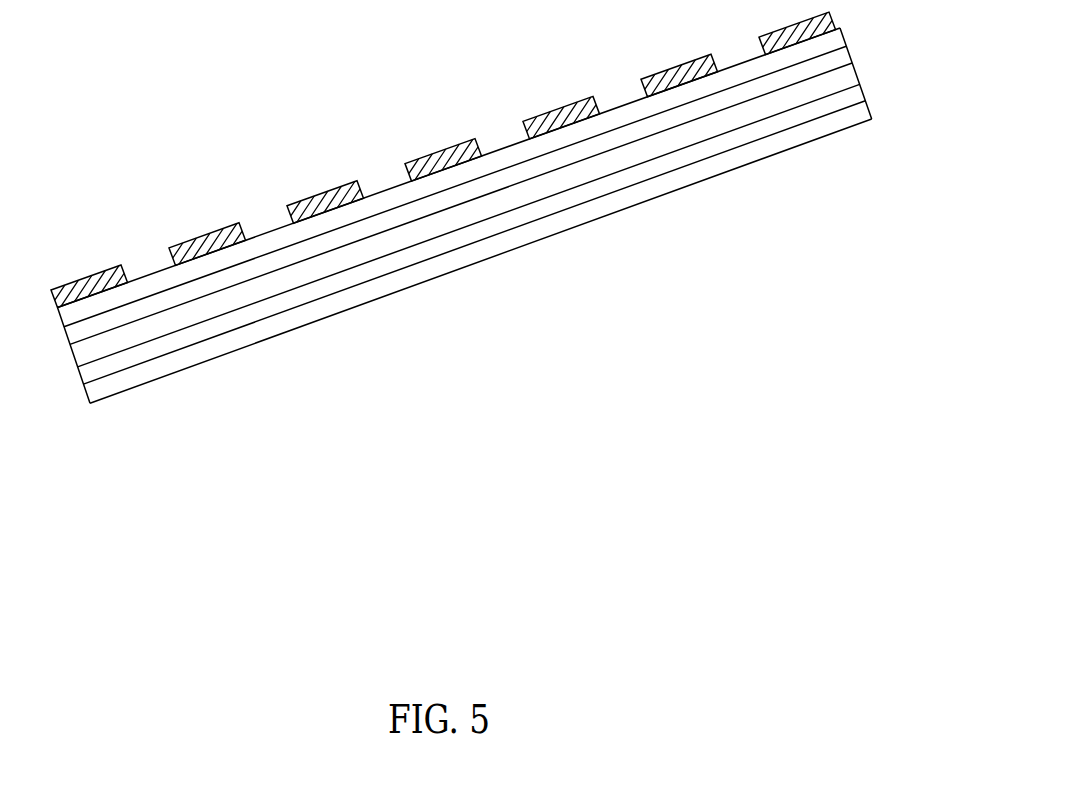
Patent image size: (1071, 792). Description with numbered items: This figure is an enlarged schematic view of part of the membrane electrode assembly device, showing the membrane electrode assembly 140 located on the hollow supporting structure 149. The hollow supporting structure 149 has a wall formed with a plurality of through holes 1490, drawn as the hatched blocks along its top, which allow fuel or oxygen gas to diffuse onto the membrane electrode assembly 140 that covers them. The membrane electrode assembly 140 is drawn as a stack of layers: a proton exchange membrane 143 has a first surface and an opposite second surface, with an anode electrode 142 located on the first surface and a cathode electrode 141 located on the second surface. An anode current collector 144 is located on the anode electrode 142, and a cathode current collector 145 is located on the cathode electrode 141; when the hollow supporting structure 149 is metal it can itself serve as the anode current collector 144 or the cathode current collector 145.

The membrane electrode assembly 140 is at (730, 235).
The cathode electrode 141 is at (253, 315).
The anode electrode 142 is at (450, 200).
The proton exchange membrane 143 is at (338, 258).
The anode current collector 144 is at (585, 130).
The cathode current collector 145 is at (185, 357).
The hollow supporting structure 149 is at (91, 276).
The through holes 1490 is at (155, 262).